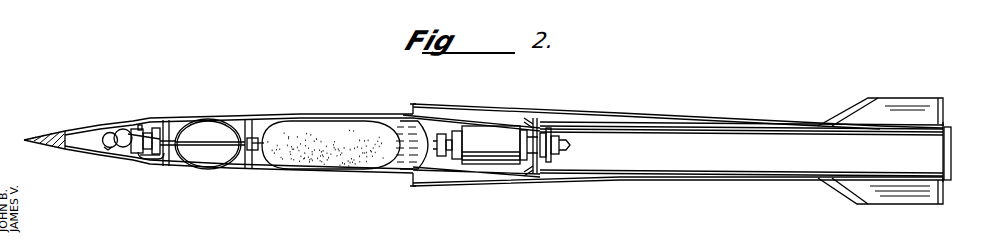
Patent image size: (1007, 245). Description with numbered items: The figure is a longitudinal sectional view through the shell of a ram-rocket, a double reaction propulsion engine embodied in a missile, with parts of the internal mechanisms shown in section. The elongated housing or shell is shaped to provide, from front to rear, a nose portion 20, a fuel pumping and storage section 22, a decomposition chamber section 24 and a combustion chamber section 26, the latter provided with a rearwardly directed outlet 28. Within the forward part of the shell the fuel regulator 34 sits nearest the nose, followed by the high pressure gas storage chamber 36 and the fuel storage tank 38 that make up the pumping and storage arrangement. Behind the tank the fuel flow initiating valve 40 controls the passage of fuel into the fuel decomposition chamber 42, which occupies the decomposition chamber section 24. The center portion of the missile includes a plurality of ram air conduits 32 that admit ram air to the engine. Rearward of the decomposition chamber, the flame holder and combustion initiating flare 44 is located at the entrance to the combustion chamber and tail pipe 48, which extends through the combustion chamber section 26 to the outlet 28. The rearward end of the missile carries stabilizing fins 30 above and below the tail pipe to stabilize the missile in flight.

The nose portion 20 is at (164, 101).
The fuel pumping and storage section 22 is at (297, 106).
The decomposition chamber section 24 is at (490, 193).
The combustion chamber section 26 is at (669, 110).
The rearwardly directed outlet 28 is at (949, 158).
The stabilizing fins 30 is at (848, 114).
The ram air conduits 32 is at (420, 182).
The fuel regulator 34 is at (148, 140).
The high pressure gas storage chamber 36 is at (204, 128).
The fuel storage tank 38 is at (385, 168).
The fuel flow initiating valve 40 is at (447, 138).
The fuel decomposition chamber 42 is at (494, 138).
The flame holder and combustion initiating flare 44 is at (556, 160).
The combustion chamber and tail pipe 48 is at (642, 162).